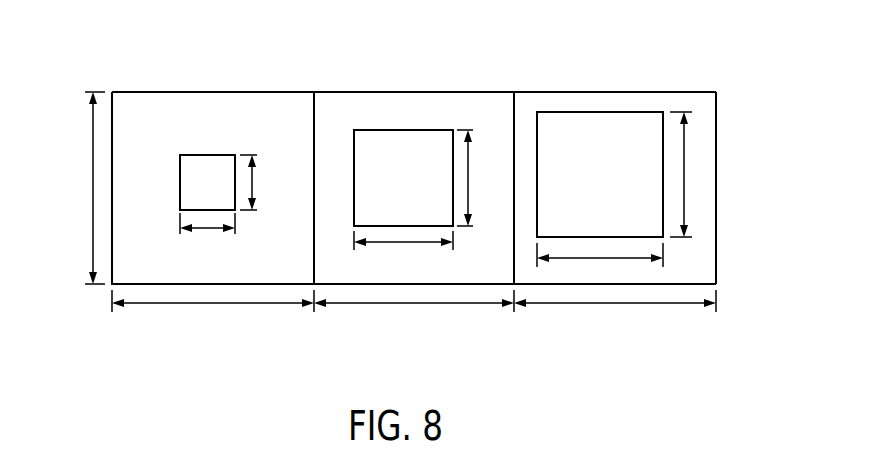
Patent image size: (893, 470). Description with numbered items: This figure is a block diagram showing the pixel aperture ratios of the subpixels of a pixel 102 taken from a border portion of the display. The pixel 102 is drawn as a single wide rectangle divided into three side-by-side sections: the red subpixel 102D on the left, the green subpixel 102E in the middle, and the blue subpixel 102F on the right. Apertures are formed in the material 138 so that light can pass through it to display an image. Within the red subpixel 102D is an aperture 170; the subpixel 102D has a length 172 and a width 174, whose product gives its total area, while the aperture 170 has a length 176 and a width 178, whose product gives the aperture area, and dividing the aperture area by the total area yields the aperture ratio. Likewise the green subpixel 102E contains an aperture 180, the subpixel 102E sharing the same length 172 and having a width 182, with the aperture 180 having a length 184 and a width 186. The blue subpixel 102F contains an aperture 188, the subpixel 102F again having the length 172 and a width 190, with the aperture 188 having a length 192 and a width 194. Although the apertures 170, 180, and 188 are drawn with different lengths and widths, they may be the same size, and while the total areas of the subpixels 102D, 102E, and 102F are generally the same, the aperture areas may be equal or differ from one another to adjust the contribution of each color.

The pixel 102 is at (114, 38).
The red subpixel 102D is at (149, 323).
The green subpixel 102E is at (366, 353).
The blue subpixel 102F is at (571, 353).
The material 138 is at (717, 178).
The aperture 170 is at (205, 154).
The length 172 is at (92, 182).
The width 174 is at (228, 306).
The length 176 is at (254, 182).
The width 178 is at (211, 233).
The aperture 180 is at (406, 128).
The width 182 is at (432, 306).
The length 184 is at (471, 185).
The width 186 is at (418, 246).
The aperture 188 is at (600, 112).
The width 190 is at (632, 306).
The length 192 is at (688, 140).
The width 194 is at (606, 259).